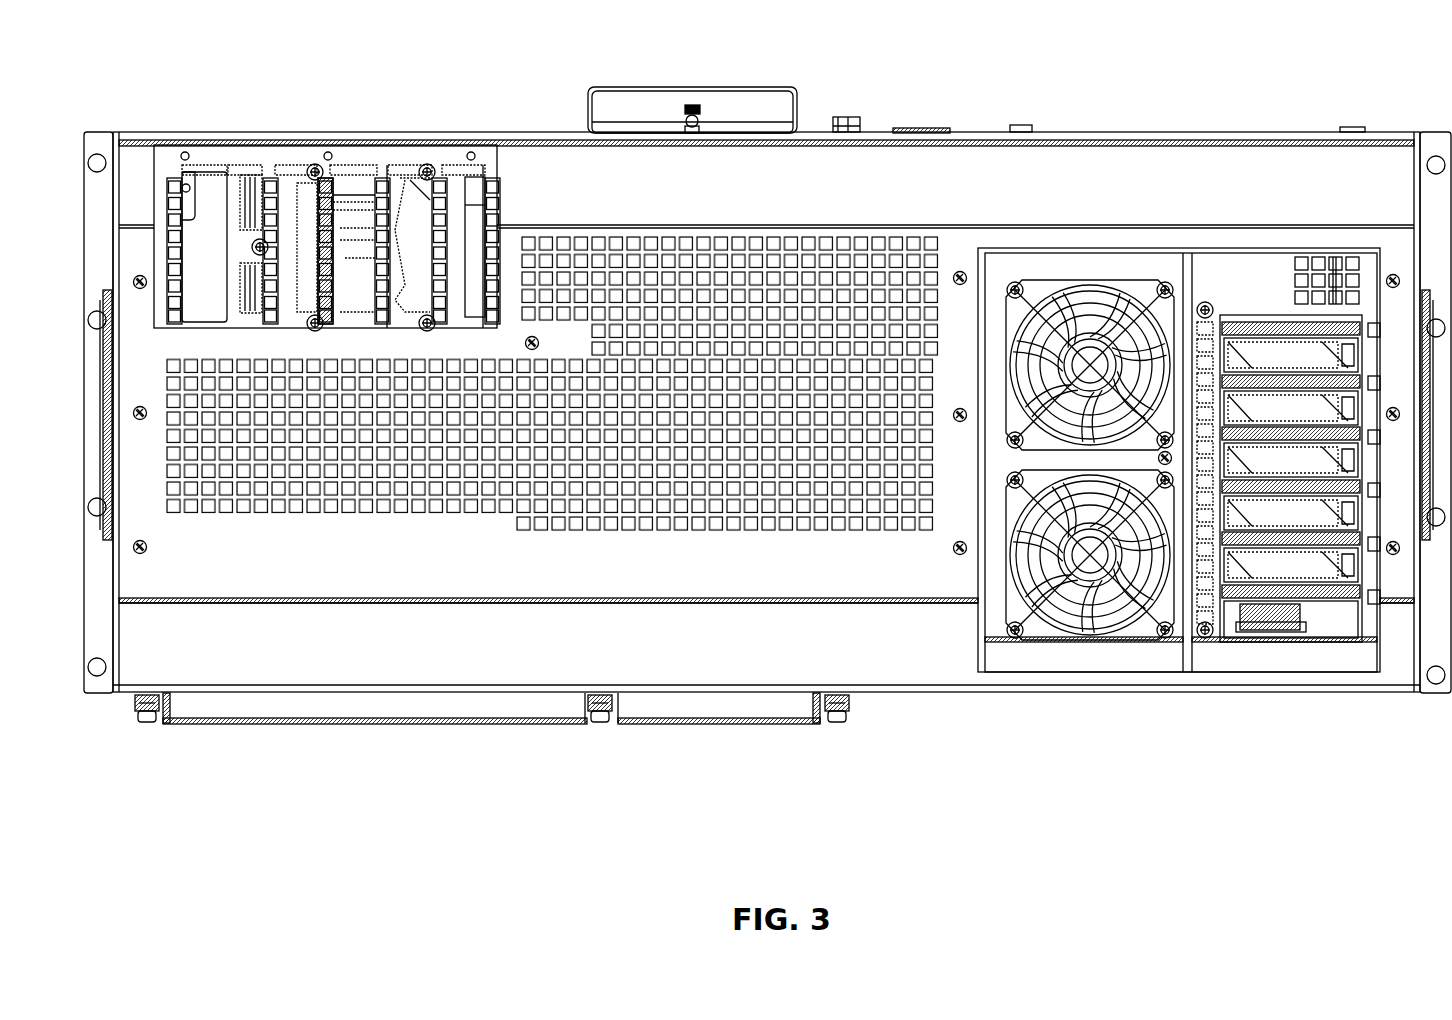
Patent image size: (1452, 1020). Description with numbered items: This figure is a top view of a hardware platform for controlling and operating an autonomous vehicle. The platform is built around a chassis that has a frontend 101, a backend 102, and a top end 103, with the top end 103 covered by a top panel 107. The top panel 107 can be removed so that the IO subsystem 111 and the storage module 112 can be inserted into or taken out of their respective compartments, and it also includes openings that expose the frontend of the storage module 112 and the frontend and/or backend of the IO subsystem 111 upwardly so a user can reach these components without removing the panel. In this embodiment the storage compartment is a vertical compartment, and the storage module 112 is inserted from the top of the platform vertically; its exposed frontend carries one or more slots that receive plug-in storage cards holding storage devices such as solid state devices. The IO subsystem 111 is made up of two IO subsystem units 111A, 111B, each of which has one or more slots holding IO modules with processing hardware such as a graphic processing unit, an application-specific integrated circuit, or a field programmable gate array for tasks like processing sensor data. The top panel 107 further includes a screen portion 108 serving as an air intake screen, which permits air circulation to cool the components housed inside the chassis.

The frontend 101 is at (1189, 73).
The backend 102 is at (540, 800).
The top end 103 is at (749, 76).
The top panel 107 is at (242, 651).
The screen portion 108 is at (750, 517).
The IO subsystem 111 is at (1362, 247).
The IO subsystem unit 111A is at (1080, 667).
The IO subsystem unit 111B is at (1290, 667).
The storage module 112 is at (265, 158).